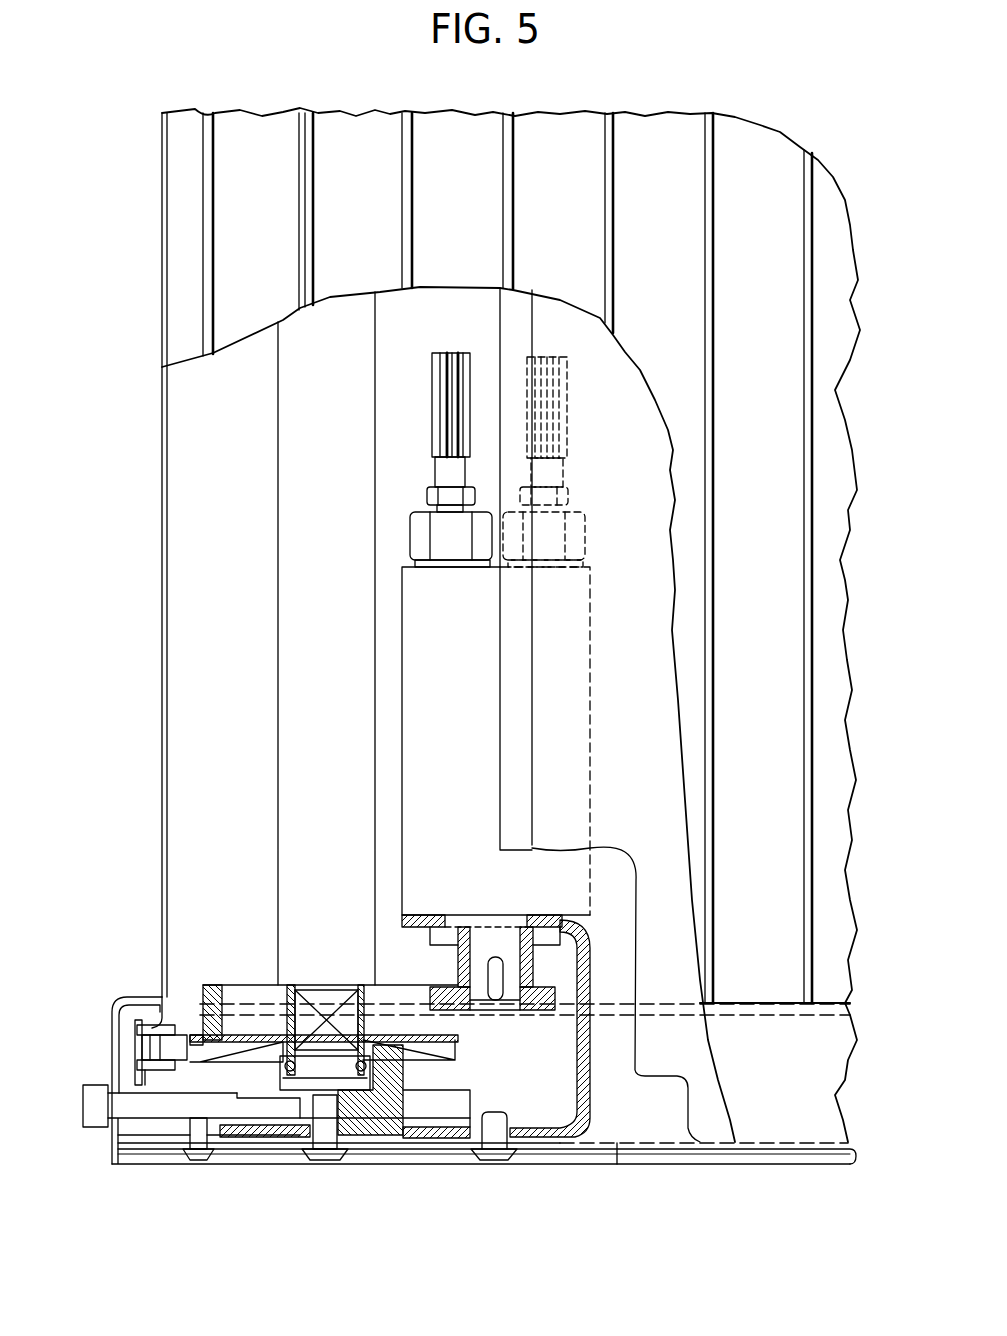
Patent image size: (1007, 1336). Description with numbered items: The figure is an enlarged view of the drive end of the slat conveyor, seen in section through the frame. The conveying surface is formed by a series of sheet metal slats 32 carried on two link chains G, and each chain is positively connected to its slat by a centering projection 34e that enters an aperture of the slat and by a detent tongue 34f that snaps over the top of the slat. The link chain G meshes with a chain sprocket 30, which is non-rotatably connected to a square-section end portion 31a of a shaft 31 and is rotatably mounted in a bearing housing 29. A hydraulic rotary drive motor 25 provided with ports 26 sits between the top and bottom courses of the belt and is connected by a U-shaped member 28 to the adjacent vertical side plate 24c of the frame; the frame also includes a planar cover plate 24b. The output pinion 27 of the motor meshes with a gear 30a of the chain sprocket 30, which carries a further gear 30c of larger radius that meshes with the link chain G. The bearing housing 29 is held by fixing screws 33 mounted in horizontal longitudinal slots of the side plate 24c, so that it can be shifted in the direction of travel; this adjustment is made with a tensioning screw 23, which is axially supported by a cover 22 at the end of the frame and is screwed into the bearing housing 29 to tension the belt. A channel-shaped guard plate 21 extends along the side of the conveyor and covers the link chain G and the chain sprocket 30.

The guard plate 21 is at (792, 1166).
The cover 22 is at (110, 1157).
The tensioning screw 23 is at (92, 1120).
The cover plate 24b is at (660, 706).
The side plate 24c is at (617, 1147).
The hydraulic rotary drive motor 25 is at (418, 782).
The ports 26 is at (547, 440).
The output pinion 27 is at (535, 972).
The U-shaped member 28 is at (557, 1147).
The bearing housing 29 is at (407, 1143).
The chain sprocket 30 is at (248, 983).
The gear 30a is at (203, 987).
The gear 30c is at (475, 1150).
The shaft 31 is at (292, 705).
The square-section end portion 31a is at (308, 1020).
The slat 32 is at (153, 719).
The fixing screw 33 is at (296, 1160).
The centering projection 34e is at (113, 1013).
The detent tongue 34f is at (143, 1077).
The link chain G is at (133, 1018).